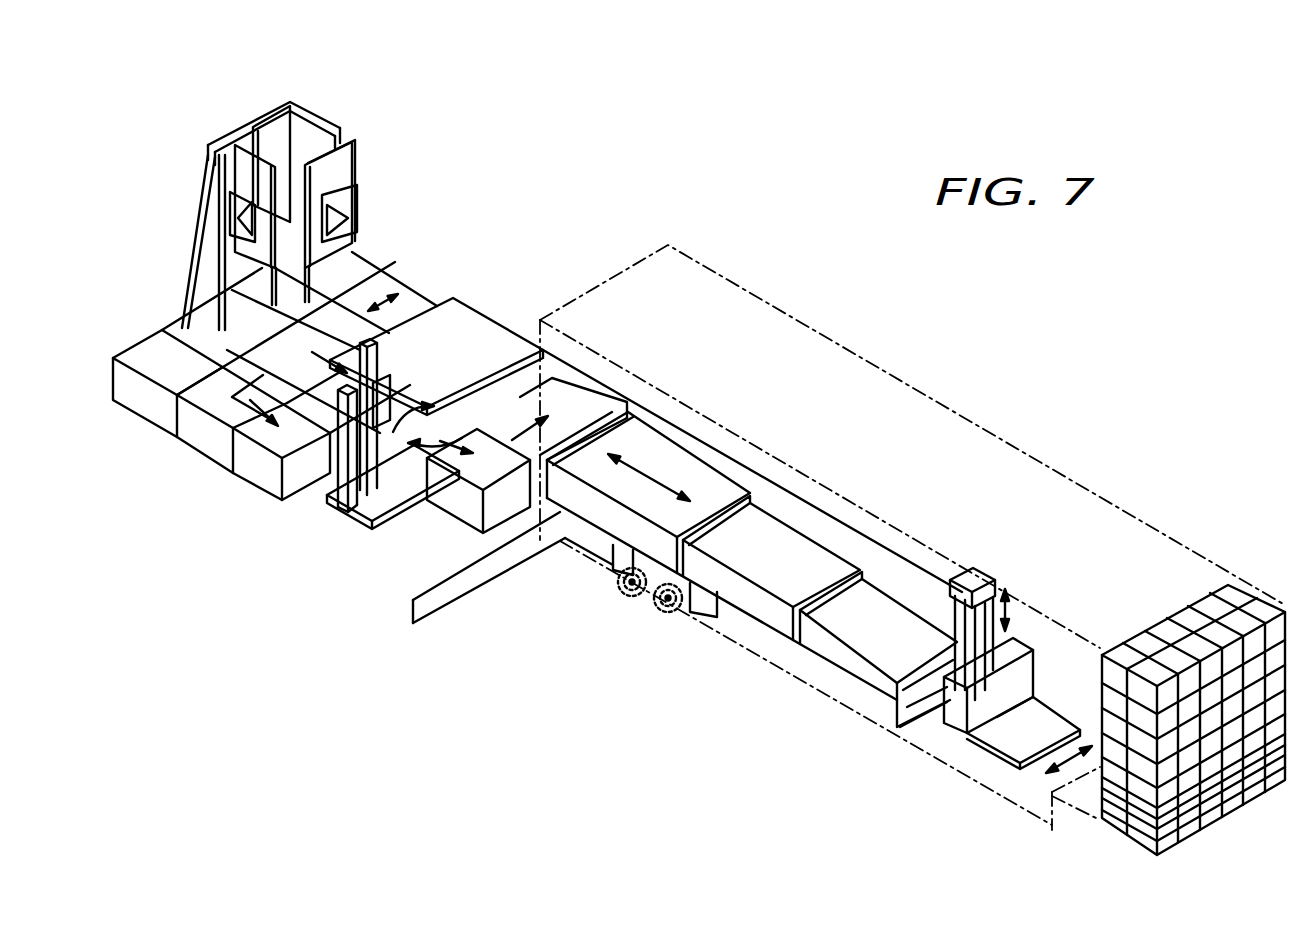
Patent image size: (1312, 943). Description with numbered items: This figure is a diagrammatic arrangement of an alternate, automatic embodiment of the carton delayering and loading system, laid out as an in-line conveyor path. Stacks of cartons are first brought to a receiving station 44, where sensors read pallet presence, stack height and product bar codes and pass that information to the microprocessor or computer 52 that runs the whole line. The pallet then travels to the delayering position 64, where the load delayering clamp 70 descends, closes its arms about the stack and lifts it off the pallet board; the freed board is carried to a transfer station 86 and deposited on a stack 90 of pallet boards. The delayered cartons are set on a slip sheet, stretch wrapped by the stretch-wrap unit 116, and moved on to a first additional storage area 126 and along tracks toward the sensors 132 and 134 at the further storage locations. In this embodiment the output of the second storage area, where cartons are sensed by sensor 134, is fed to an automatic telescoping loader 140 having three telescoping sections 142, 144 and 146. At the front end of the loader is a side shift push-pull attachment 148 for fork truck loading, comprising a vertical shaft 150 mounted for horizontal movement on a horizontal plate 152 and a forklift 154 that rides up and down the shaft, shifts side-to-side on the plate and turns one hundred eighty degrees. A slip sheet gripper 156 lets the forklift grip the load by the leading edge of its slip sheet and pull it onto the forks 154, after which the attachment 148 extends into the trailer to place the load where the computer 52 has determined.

The receiving station 44 is at (348, 270).
The microprocessor 52 is at (397, 286).
The delayering position 64 is at (283, 350).
The load delayering clamp 70 is at (272, 103).
The transfer station 86 is at (203, 440).
The stack 90 is at (252, 490).
The stretch-wrap unit 116 is at (328, 517).
The first additional storage area 126 is at (448, 517).
The sensor 132 is at (500, 432).
The sensor 134 is at (565, 398).
The automatic telescoping loader 140 is at (667, 434).
The telescoping section 142 is at (703, 482).
The telescoping section 144 is at (765, 542).
The telescoping section 146 is at (873, 612).
The side shift push-pull attachment 148 is at (1007, 576).
The vertical shaft 150 is at (957, 580).
The horizontal plate 152 is at (918, 702).
The forklift 154 is at (1000, 742).
The slip sheet gripper 156 is at (1013, 678).